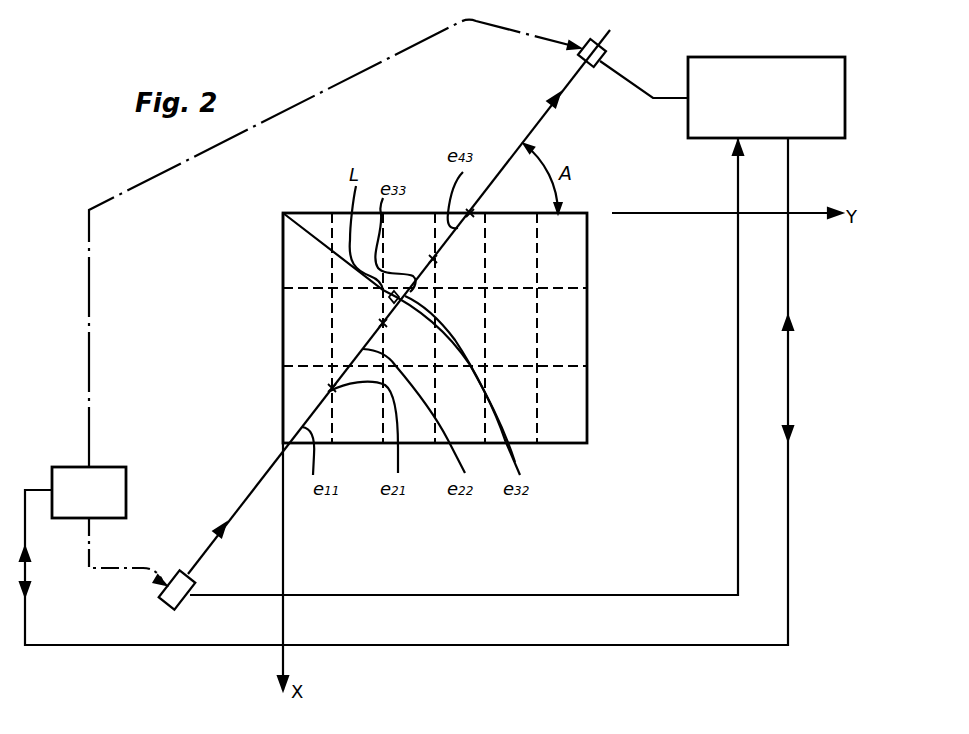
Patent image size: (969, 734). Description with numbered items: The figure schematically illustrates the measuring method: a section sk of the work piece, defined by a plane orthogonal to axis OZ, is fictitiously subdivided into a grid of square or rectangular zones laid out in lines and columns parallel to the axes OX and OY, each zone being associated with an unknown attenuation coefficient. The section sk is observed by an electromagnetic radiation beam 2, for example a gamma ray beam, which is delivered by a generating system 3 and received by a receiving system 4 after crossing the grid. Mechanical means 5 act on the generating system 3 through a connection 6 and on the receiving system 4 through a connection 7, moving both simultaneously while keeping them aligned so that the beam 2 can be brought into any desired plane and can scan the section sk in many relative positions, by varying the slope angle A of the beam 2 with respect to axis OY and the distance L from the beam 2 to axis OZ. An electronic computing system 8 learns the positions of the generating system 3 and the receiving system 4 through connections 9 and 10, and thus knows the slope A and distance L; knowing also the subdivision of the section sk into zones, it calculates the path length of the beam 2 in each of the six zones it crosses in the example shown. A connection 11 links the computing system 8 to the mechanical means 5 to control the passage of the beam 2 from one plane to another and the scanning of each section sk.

The electromagnetic radiation beam 2 is at (247, 497).
The generating system 3 is at (170, 572).
The receiving system 4 is at (601, 37).
The mechanical means 5 is at (66, 478).
The connection 6 is at (98, 570).
The connection 7 is at (172, 169).
The electronic computing system 8 is at (761, 78).
The connection 9 is at (502, 595).
The connection 10 is at (634, 84).
The connection 11 is at (788, 540).
The section Sk is at (592, 340).